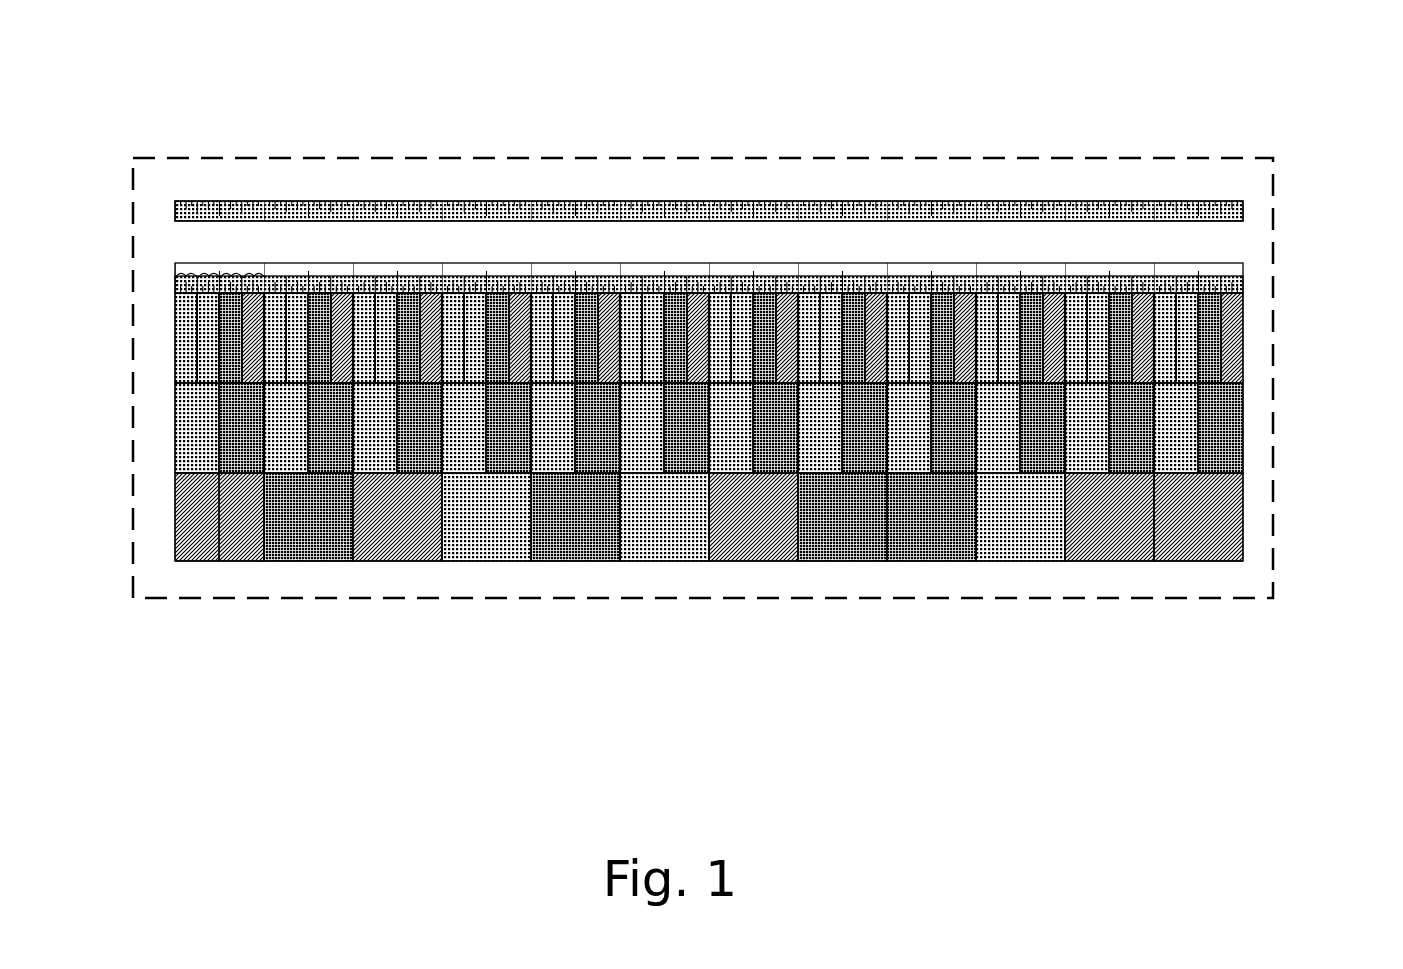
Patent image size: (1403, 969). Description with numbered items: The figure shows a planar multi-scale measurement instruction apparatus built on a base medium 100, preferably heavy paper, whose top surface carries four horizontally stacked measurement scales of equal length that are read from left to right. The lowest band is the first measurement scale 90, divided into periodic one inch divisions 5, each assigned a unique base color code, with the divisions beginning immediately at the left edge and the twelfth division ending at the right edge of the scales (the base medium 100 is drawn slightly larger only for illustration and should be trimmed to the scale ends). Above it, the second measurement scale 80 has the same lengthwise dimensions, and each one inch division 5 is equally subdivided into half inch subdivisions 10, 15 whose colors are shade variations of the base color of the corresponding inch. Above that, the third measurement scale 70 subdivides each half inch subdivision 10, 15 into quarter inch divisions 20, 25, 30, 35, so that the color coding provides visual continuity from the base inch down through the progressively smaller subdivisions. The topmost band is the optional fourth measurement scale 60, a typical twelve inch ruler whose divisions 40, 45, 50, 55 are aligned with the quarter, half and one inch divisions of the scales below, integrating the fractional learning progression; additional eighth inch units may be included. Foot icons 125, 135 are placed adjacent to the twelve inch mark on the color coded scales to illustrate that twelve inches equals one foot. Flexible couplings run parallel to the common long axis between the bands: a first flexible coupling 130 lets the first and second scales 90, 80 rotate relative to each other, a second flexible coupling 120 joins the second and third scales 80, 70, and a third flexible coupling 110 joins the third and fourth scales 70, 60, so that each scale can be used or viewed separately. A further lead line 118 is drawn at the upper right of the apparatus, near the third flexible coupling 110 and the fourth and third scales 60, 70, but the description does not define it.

The one inch division 5 is at (245, 540).
The half inch subdivision 10 is at (227, 447).
The half inch subdivision 15 is at (188, 447).
The quarter inch division 20 is at (237, 372).
The quarter inch division 25 is at (213, 362).
The quarter inch division 30 is at (213, 338).
The quarter inch division 35 is at (167, 310).
The division 40 is at (172, 262).
The division 45 is at (195, 262).
The division 50 is at (218, 262).
The division 55 is at (240, 262).
The fourth measurement scale 60 is at (1235, 215).
The third measurement scale 70 is at (1235, 352).
The second measurement scale 80 is at (1235, 445).
The first measurement scale 90 is at (1235, 553).
The base medium 100 is at (141, 533).
The third flexible coupling 110 is at (100, 285).
The first row of segments 118 is at (1235, 300).
The second flexible coupling 120 is at (1235, 375).
The foot icon 125 is at (1235, 393).
The first flexible coupling 130 is at (100, 465).
The foot icon 135 is at (1235, 485).